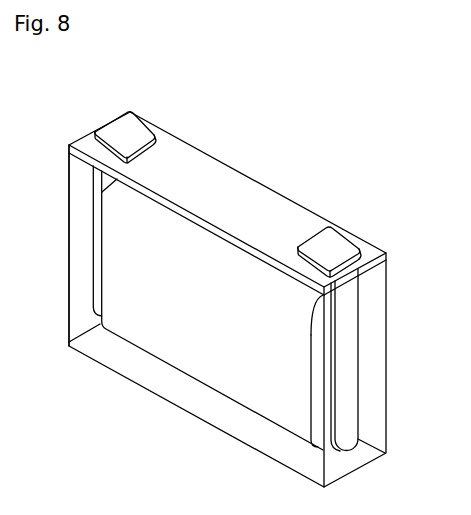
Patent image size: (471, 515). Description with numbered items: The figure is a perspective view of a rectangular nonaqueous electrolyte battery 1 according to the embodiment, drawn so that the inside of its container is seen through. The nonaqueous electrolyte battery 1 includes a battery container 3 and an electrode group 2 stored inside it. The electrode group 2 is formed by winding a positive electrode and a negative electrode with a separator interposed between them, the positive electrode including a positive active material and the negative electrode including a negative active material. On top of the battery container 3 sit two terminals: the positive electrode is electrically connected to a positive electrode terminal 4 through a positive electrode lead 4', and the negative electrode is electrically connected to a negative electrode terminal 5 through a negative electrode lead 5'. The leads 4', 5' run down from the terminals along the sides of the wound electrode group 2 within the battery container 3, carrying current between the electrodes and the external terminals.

The nonaqueous electrolyte battery 1 is at (311, 172).
The electrode group 2 is at (212, 310).
The battery container 3 is at (69, 213).
The positive electrode terminal 4 is at (125, 122).
The positive electrode lead 4' is at (70, 241).
The negative electrode terminal 5 is at (329, 234).
The negative electrode lead 5' is at (371, 361).